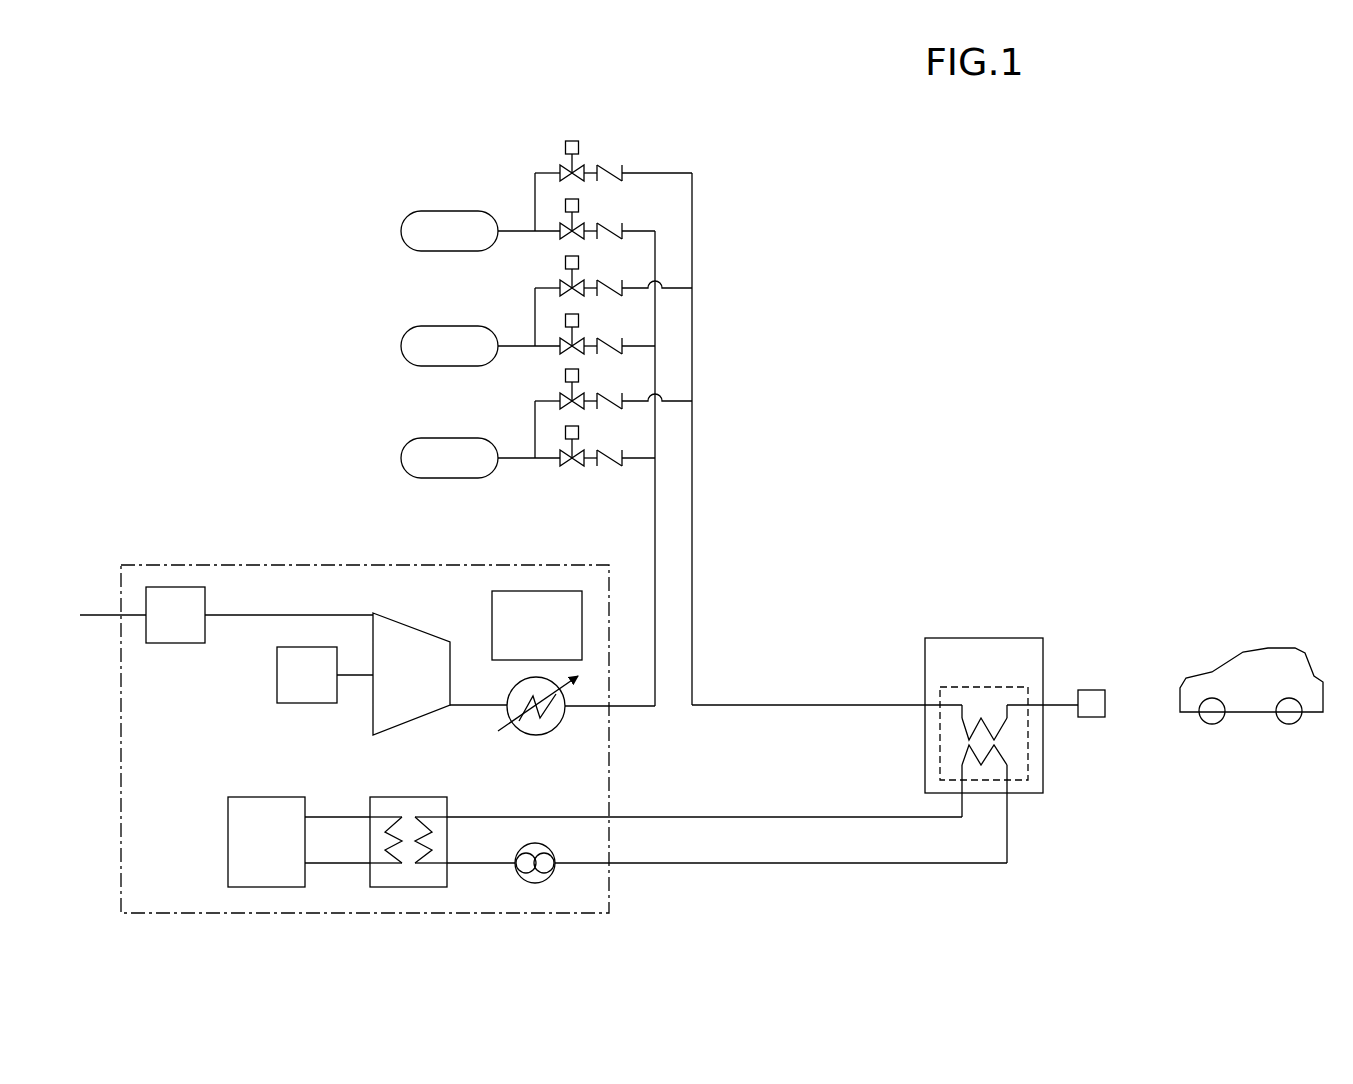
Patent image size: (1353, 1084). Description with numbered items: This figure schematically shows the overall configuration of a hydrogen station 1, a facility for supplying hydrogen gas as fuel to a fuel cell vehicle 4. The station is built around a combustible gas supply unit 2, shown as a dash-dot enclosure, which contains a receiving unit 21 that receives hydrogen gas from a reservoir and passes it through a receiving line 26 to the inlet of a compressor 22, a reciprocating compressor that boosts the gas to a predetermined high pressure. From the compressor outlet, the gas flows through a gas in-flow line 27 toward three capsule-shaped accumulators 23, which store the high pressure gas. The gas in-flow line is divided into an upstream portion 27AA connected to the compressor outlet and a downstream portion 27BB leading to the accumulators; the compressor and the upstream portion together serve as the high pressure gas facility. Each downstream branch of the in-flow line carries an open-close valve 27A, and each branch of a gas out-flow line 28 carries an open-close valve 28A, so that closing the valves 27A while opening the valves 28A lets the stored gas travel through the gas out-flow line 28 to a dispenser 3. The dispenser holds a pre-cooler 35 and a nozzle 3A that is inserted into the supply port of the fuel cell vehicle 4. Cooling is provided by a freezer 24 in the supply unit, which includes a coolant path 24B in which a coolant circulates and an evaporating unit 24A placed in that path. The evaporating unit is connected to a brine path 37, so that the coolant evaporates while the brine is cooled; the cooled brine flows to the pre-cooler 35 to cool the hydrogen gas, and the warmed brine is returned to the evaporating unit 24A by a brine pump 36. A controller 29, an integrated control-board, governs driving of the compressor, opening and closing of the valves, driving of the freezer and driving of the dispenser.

The hydrogen station 1 is at (518, 92).
The combustible gas supply unit 2 is at (223, 565).
The receiving unit 21 is at (175, 586).
The compressor 22 is at (413, 625).
The accumulator 23 is at (420, 210).
The freezer 24 is at (326, 780).
The evaporating unit 24A is at (409, 887).
The coolant path 24B is at (338, 865).
The receiving line 26 is at (272, 605).
The gas in-flow line 27 is at (558, 738).
The open-close valve 27A is at (579, 205).
The upstream portion 27AA is at (590, 706).
The downstream portion 27BB is at (655, 570).
The gas out-flow line 28 is at (692, 510).
The open-close valve 28A is at (579, 147).
The controller 29 is at (575, 591).
The dispenser 3 is at (1000, 637).
The nozzle 3A is at (1093, 688).
The pre-cooler 35 is at (1043, 755).
The brine pump 36 is at (548, 882).
The brine path 37 is at (483, 863).
The fuel cell vehicle 4 is at (1245, 712).